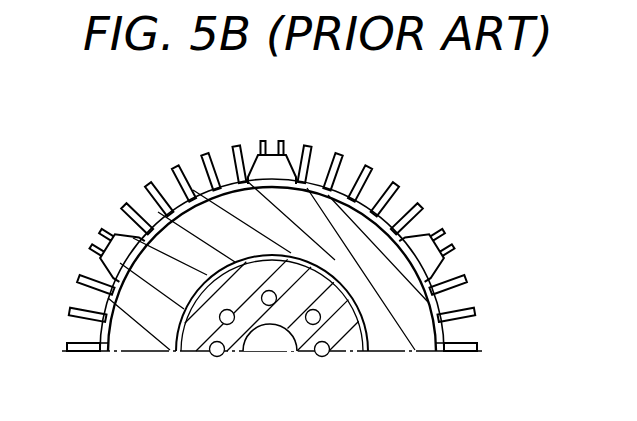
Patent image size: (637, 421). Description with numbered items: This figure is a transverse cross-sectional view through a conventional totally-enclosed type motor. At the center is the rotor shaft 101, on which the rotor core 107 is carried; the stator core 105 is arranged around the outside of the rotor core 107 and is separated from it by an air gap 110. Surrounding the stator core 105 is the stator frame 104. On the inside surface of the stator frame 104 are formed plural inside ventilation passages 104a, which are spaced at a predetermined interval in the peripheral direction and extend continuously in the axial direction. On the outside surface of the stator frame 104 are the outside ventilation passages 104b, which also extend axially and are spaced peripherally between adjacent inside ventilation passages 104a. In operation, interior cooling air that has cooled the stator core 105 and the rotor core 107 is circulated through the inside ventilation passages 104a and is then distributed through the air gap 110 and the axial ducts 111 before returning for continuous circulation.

The rotor shaft 101 is at (265, 345).
The stator frame 104 is at (272, 230).
The inside ventilation passages 104a is at (295, 167).
The outside ventilation passages 104b is at (162, 187).
The stator core 105 is at (332, 197).
The rotor core 107 is at (357, 343).
The air gap 110 is at (320, 266).
The axial ducts 111 is at (311, 325).